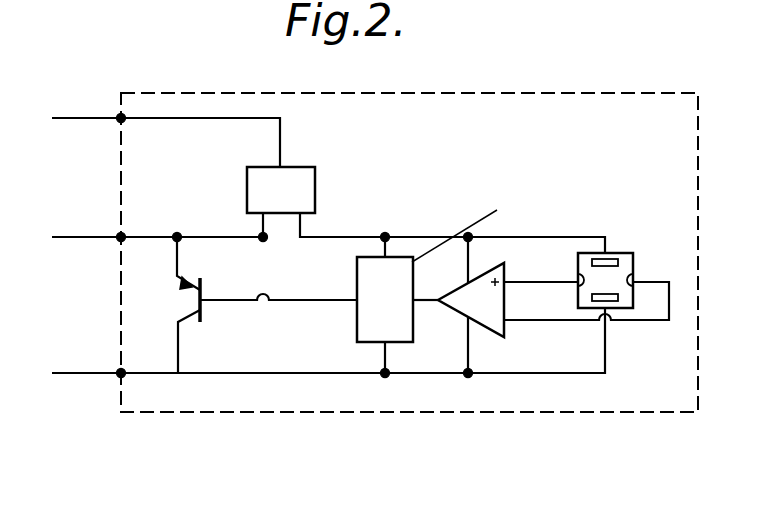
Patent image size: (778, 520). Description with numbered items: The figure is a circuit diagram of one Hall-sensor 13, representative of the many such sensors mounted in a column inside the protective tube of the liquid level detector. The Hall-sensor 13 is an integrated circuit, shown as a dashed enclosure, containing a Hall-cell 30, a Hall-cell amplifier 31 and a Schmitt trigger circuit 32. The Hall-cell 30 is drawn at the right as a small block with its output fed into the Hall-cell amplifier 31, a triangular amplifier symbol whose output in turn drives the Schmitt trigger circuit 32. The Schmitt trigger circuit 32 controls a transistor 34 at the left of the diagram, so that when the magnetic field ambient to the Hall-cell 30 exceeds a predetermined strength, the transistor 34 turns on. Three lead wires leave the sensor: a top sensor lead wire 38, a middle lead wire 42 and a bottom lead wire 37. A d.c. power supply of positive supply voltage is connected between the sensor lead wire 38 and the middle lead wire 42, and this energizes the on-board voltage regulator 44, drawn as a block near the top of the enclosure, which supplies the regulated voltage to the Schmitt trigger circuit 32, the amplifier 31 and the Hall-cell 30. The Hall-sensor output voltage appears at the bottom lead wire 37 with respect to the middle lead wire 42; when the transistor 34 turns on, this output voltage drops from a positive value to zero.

The Hall-sensor 13 is at (605, 91).
The Hall-cell 30 is at (620, 270).
The Hall-cell amplifier 31 is at (490, 316).
The Schmitt trigger circuit 32 is at (399, 311).
The transistor 34 is at (200, 320).
The bottom lead wire 37 is at (65, 373).
The sensor lead wire 38 is at (78, 118).
The middle lead wire 42 is at (82, 237).
The voltage regulator 44 is at (332, 168).